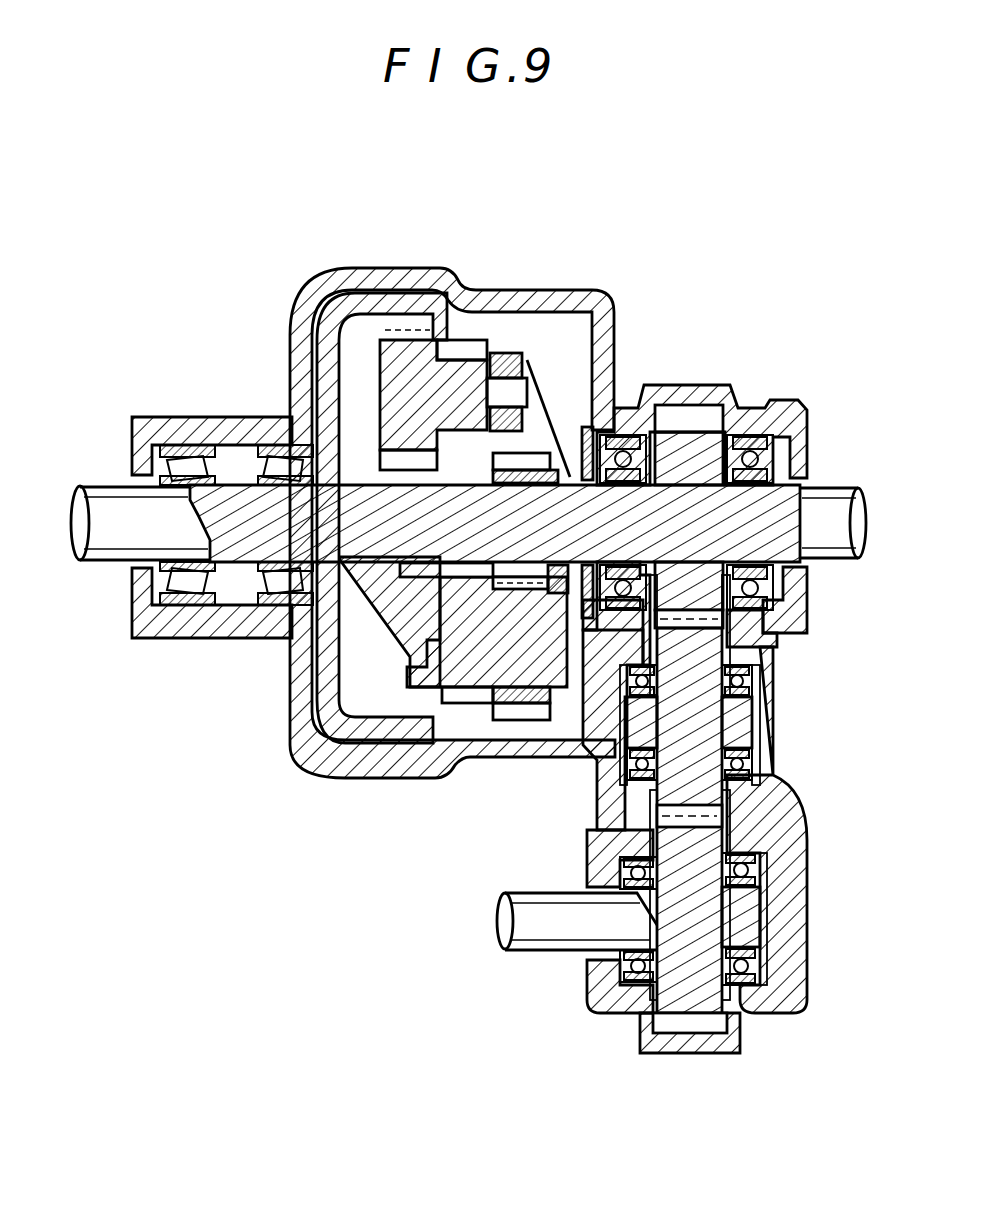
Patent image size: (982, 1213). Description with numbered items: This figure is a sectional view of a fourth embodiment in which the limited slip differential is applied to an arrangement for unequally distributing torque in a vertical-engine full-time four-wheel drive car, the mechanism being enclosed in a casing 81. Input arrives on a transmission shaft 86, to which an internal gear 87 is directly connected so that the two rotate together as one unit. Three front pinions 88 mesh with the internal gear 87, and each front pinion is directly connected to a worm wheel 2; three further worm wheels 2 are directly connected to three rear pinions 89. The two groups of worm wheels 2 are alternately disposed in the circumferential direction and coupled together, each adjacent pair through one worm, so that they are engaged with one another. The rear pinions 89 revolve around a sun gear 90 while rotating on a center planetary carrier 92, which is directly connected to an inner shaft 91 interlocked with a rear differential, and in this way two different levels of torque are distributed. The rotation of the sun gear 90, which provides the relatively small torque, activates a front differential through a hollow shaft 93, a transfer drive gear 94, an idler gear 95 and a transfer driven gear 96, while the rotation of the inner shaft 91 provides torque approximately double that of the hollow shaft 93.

The worm wheel 2 is at (447, 437).
The casing 81 is at (767, 667).
The transmission shaft 86 is at (108, 488).
The internal gear 87 is at (362, 308).
The front pinion 88 is at (432, 330).
The rear pinion 89 is at (522, 710).
The sun gear 90 is at (533, 460).
The inner shaft 91 is at (837, 490).
The center planetary carrier 92 is at (376, 596).
The hollow shaft 93 is at (770, 443).
The transfer drive gear 94 is at (687, 417).
The idler gear 95 is at (707, 791).
The transfer driven gear 96 is at (640, 1025).